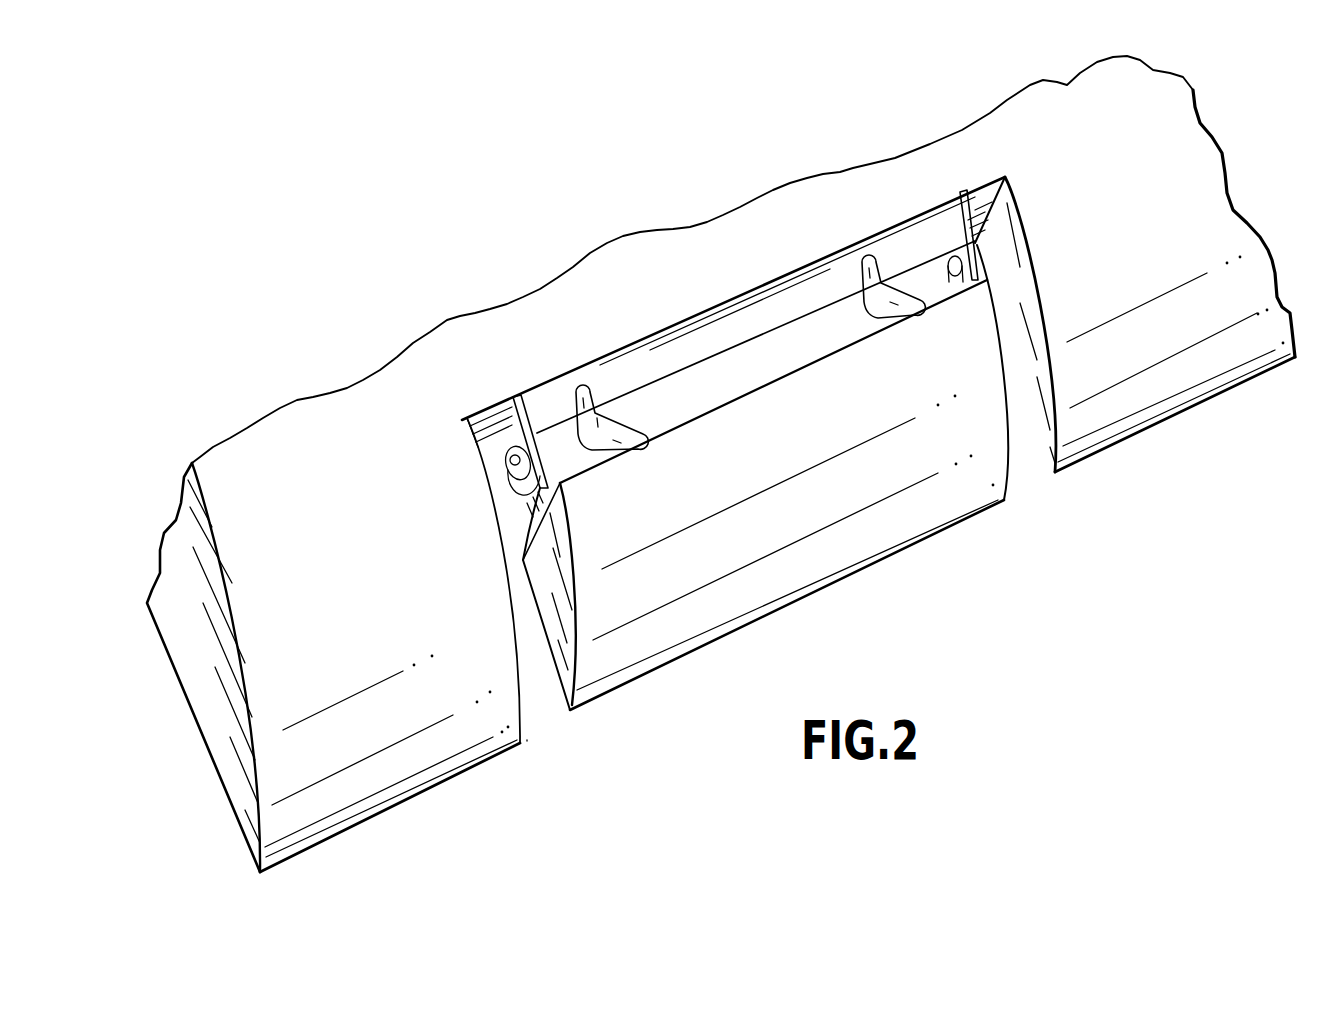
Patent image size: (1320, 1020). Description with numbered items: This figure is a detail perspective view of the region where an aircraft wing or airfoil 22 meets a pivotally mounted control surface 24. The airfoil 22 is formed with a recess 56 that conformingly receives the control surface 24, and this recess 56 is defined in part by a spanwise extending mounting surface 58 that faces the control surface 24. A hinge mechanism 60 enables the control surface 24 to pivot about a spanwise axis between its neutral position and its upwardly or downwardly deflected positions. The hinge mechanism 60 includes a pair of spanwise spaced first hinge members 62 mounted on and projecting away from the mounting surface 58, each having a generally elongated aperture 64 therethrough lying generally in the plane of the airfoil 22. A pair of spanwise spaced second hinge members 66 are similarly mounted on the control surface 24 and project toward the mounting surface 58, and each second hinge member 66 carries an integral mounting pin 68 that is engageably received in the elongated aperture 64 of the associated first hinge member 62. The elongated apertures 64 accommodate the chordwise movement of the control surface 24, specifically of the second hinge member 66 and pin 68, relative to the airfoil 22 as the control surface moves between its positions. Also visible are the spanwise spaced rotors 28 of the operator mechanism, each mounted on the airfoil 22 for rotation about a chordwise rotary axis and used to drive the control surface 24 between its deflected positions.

The airfoil 22 is at (323, 410).
The control surface 24 is at (821, 558).
The rotor 28 is at (600, 393).
The recess 56 is at (540, 717).
The mounting surface 58 is at (690, 337).
The hinge mechanism 60 is at (950, 178).
The first hinge member 62 is at (507, 398).
The elongated aperture 64 is at (500, 442).
The second hinge member 66 is at (526, 520).
The mounting pin 68 is at (506, 470).